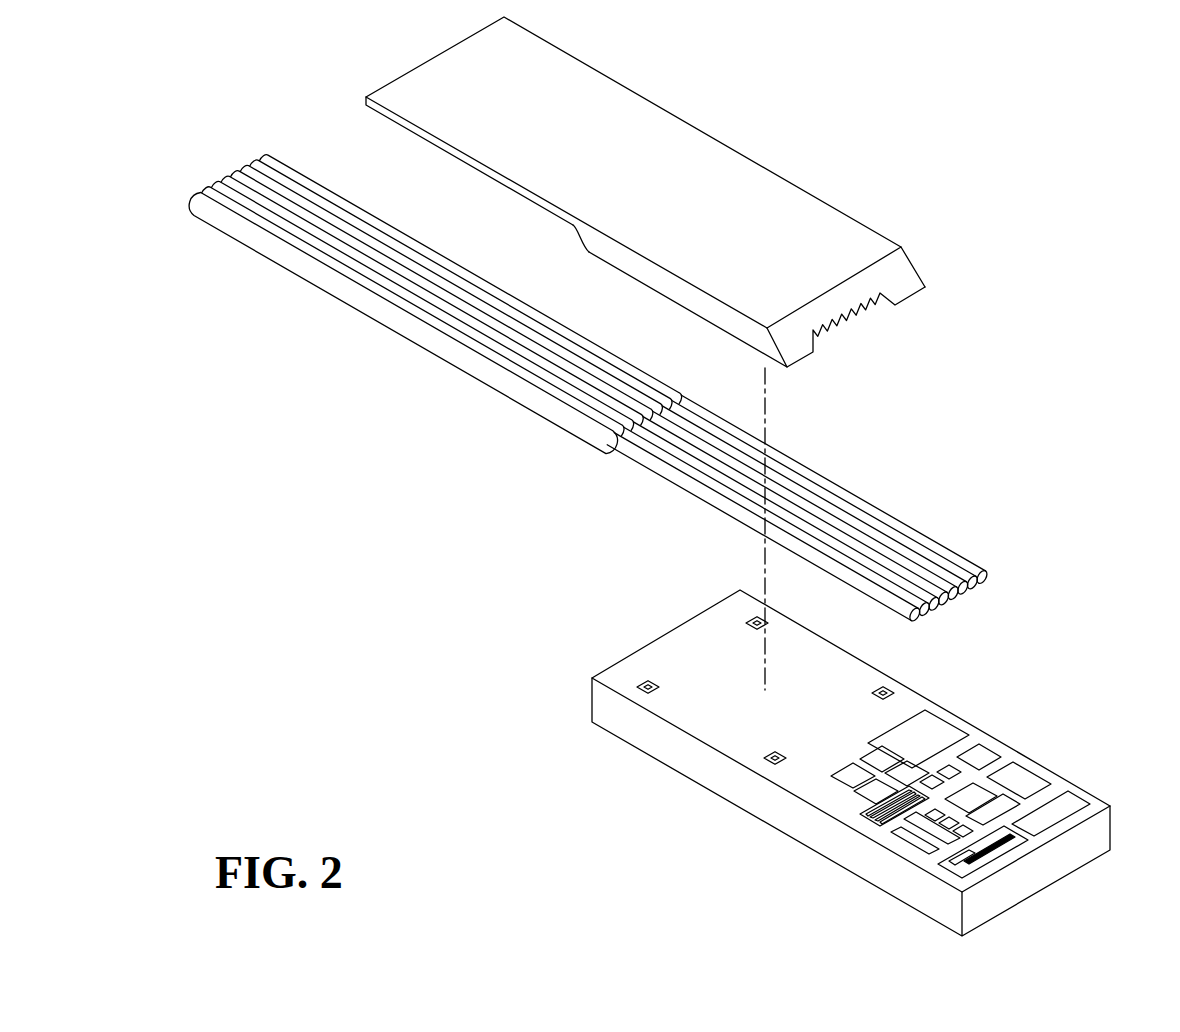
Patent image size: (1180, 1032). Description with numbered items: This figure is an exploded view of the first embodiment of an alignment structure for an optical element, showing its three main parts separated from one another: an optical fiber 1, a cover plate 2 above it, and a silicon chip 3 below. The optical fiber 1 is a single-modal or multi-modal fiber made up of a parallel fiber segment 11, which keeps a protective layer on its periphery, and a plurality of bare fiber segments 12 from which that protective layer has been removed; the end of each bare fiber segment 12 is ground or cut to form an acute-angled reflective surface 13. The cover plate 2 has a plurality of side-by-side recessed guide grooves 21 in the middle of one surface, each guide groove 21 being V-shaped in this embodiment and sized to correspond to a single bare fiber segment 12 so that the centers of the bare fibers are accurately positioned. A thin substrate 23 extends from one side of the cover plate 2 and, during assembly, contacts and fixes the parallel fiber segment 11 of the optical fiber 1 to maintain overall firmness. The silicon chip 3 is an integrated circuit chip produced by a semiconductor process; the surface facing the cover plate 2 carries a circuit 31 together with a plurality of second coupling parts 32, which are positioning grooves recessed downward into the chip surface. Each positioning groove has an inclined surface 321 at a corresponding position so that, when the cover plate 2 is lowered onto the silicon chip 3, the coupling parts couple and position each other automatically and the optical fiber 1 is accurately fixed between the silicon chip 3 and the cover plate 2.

The optical fiber 1 is at (645, 390).
The parallel fiber segment 11 is at (566, 423).
The bare fiber segment 12 is at (643, 460).
The acute-angled reflective surface 13 is at (988, 579).
The cover plate 2 is at (684, 205).
The guide groove 21 is at (881, 295).
The thin substrate 23 is at (488, 173).
The silicon chip 3 is at (848, 742).
The circuit 31 is at (895, 803).
The second coupling part 32 is at (771, 708).
The inclined surface 321 is at (645, 683).